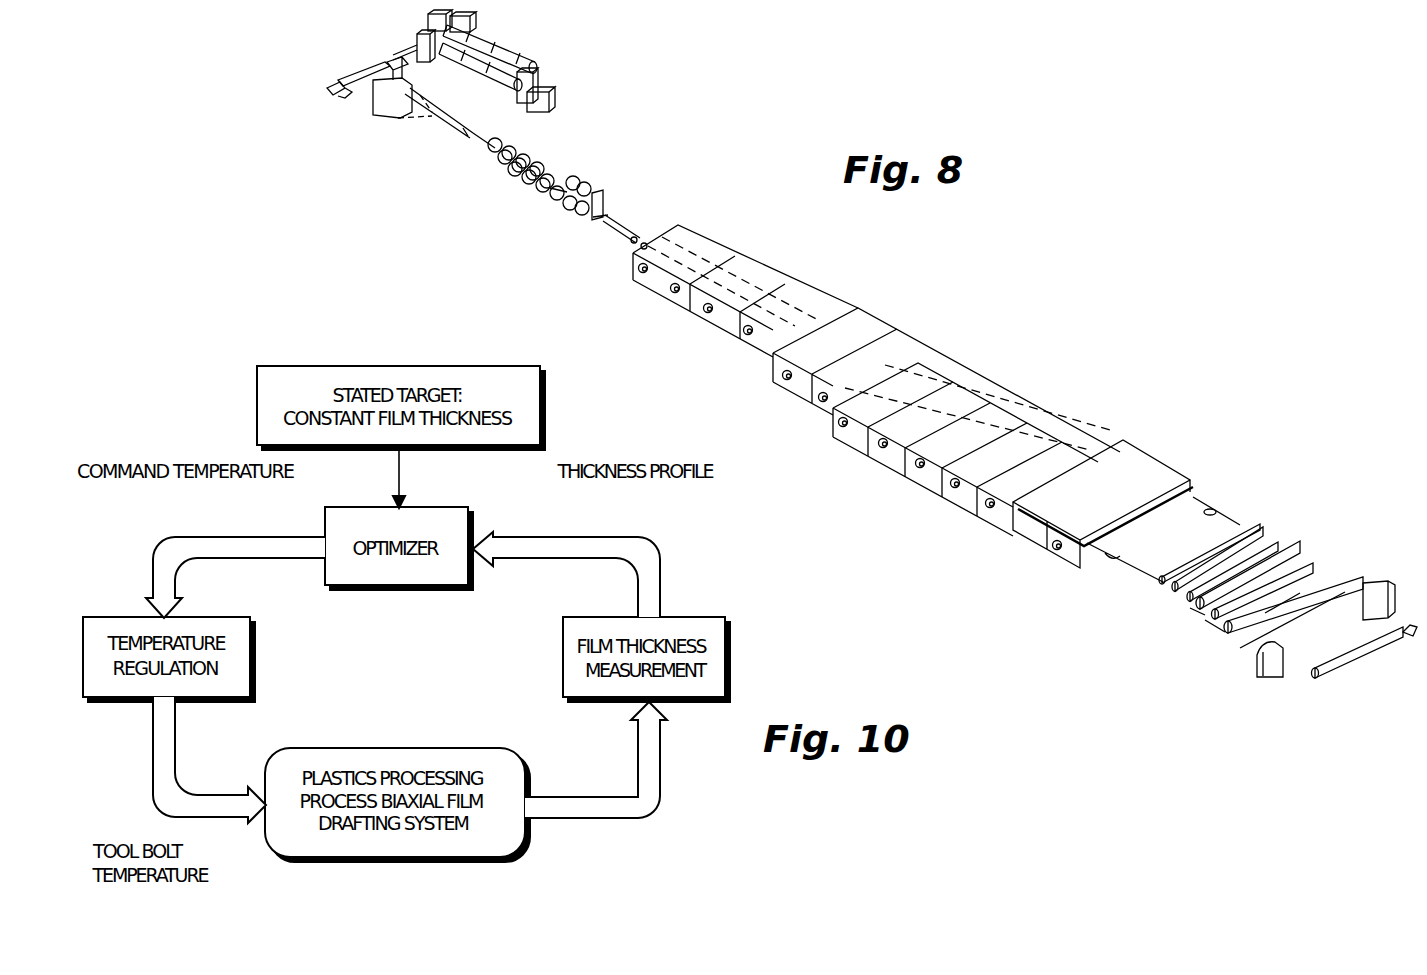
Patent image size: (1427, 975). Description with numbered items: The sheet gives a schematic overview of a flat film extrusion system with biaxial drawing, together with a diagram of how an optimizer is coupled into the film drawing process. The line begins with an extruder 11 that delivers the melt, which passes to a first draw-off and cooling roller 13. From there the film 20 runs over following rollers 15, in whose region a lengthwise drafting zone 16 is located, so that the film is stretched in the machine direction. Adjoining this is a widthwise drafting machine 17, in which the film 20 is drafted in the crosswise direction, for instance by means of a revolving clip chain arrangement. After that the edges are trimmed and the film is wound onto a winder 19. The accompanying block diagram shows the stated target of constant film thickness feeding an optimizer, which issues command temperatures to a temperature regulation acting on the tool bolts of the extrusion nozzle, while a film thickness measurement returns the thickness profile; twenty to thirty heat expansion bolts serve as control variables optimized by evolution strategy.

The extruder 11 is at (533, 57).
The first draw-off and cooling roller 13 is at (388, 102).
The following rollers 15 is at (550, 155).
The lengthwise drafting zone 16 is at (553, 195).
The widthwise drafting machine 17 is at (833, 428).
The winder 19 is at (1288, 637).
The film 20 is at (1142, 557).